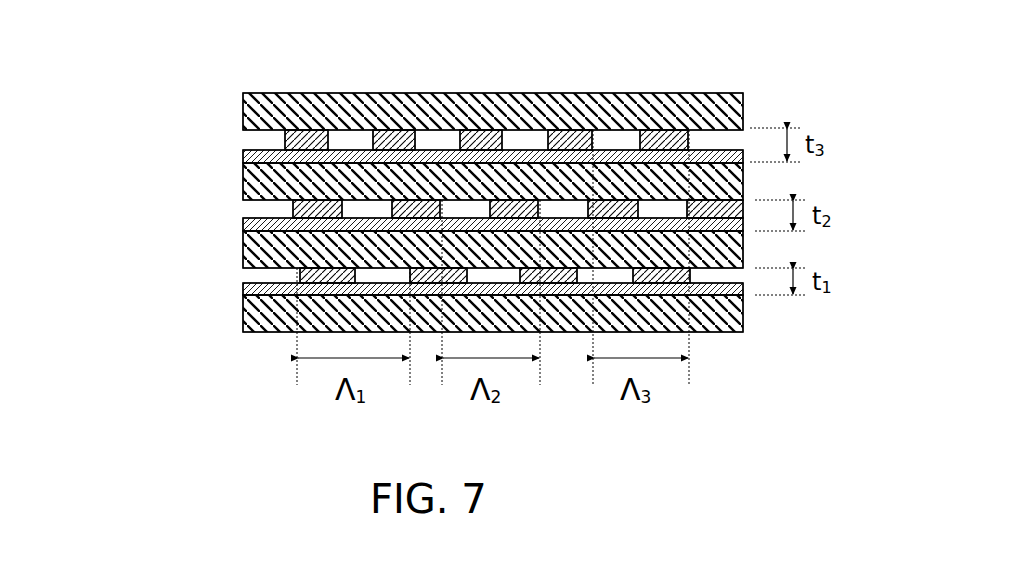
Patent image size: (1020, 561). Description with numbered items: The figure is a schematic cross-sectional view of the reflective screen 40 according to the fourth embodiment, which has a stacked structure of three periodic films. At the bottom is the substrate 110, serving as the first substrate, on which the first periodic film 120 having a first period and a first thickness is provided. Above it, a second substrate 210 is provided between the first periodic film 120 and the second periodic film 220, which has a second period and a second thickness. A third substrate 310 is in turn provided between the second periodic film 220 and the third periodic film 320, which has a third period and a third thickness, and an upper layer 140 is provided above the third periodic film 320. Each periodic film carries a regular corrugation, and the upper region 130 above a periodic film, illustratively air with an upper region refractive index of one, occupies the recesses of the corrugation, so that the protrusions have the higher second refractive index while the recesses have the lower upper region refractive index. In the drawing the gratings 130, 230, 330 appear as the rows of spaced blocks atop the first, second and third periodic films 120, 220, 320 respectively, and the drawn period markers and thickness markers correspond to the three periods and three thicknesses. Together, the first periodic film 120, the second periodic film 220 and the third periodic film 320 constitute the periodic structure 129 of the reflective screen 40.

The reflective screen 40 is at (828, 72).
The substrate 110 is at (255, 332).
The first periodic film 120 is at (243, 290).
The periodic structure 129 is at (97, 113).
The upper region 130 is at (253, 270).
The upper layer 140 is at (640, 93).
The second substrate 210 is at (243, 252).
The second periodic film 220 is at (243, 225).
The second grating 230 is at (243, 210).
The third substrate 310 is at (243, 181).
The third periodic film 320 is at (243, 157).
The third grating 330 is at (243, 138).